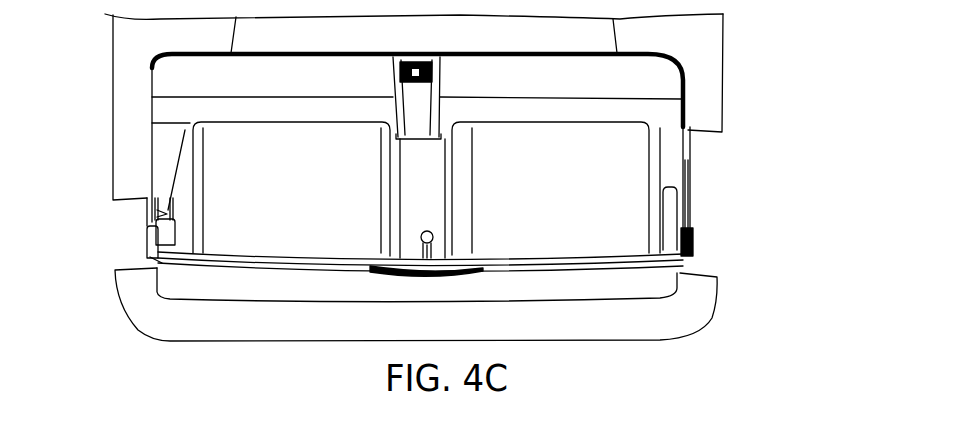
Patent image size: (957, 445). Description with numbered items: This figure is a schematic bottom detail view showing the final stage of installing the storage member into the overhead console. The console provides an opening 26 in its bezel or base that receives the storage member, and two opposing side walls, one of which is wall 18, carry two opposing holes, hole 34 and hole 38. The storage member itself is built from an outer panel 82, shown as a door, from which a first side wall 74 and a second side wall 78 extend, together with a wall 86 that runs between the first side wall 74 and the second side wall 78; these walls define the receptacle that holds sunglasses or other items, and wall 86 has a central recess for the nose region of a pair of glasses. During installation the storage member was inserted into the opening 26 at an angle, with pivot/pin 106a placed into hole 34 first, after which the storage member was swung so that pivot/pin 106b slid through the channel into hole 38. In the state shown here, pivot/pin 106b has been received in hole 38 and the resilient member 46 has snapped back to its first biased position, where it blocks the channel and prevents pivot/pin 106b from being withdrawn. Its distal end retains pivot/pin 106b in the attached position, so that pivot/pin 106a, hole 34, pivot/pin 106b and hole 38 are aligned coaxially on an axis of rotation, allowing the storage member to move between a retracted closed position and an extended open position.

The wall 18 is at (97, 111).
The opening 26 is at (629, 278).
The hole/aperture 34 is at (137, 229).
The hole/aperture 38 is at (707, 247).
The resilient member 46 is at (690, 213).
The first side wall 74 is at (185, 166).
The second side wall 78 is at (690, 157).
The outer panel 82 is at (621, 140).
The wall 86 is at (220, 152).
The pivot/pin 106a is at (147, 240).
The pivot/pin 106b is at (693, 238).